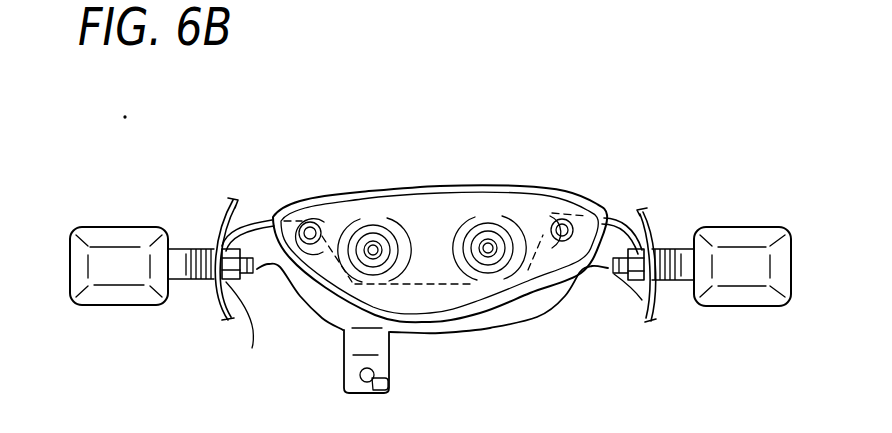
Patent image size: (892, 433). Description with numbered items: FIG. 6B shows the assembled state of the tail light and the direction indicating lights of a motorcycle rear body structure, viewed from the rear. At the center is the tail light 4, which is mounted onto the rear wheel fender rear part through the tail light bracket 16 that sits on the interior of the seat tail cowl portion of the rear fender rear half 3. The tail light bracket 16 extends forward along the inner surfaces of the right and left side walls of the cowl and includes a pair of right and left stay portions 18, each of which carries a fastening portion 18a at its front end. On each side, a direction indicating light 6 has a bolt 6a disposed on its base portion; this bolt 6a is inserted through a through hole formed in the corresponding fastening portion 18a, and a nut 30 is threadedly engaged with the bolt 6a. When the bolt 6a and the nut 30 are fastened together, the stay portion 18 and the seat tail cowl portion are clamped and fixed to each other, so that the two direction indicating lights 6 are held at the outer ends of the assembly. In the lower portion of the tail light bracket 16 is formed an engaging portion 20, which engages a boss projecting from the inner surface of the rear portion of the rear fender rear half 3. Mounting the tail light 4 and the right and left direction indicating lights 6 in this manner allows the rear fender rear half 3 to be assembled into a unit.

The tail light 4 is at (427, 185).
The rear fender rear half 3 is at (657, 215).
The direction indicating light 6 is at (142, 226).
The bolt 6a is at (258, 283).
The tail light bracket 16 is at (490, 332).
The stay portion 18 is at (259, 222).
The fastening portion 18a is at (242, 290).
The engaging portion 20 is at (380, 383).
The nut 30 is at (245, 221).